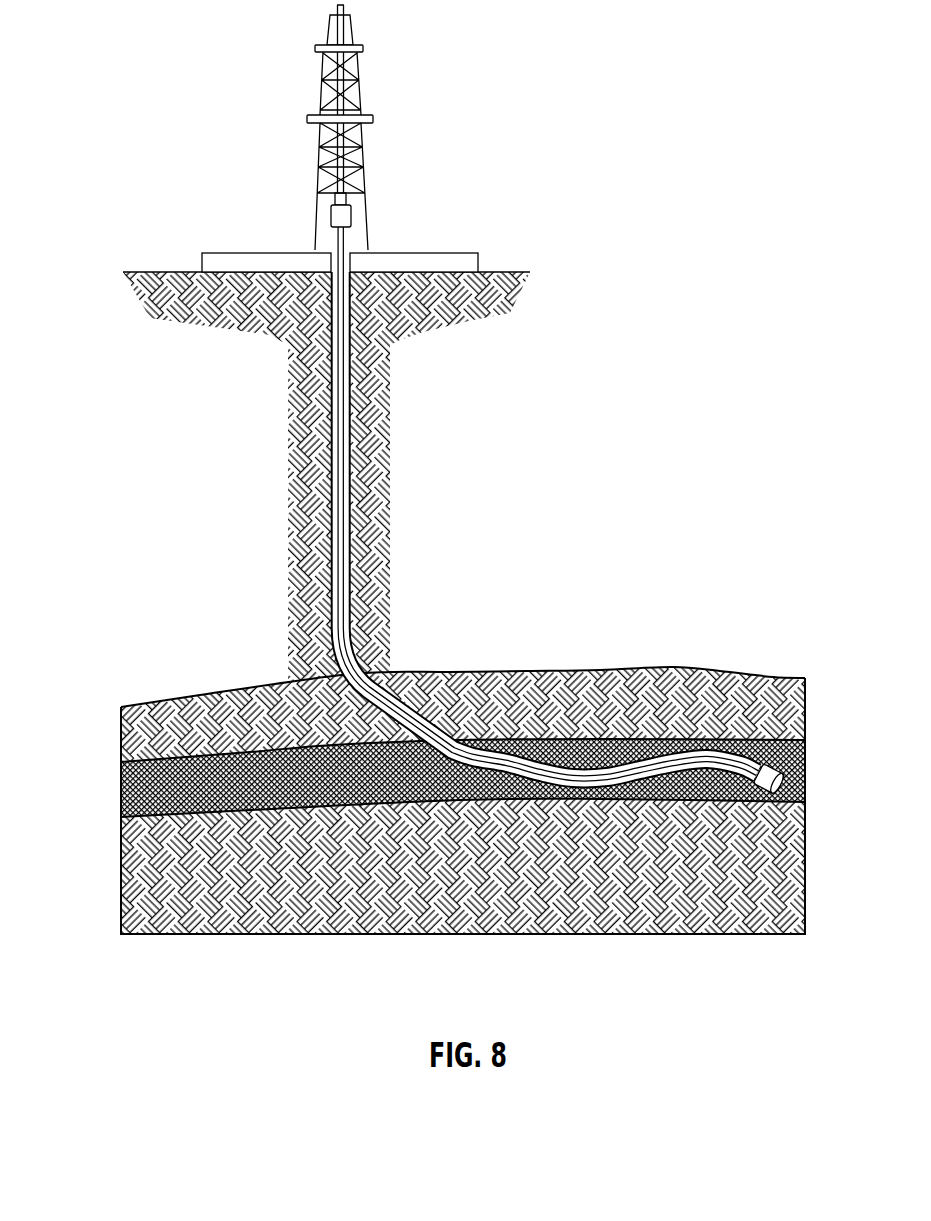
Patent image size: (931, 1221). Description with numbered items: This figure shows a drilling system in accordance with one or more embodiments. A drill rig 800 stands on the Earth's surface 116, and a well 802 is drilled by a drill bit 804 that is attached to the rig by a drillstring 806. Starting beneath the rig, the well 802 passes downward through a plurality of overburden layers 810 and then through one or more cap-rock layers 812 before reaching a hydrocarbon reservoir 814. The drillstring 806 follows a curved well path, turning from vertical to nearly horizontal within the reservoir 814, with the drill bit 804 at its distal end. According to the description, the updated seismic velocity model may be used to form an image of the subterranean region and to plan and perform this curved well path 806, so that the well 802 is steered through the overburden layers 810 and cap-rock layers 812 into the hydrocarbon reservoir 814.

The Earth's surface 116 is at (518, 272).
The drilling rig 800 is at (362, 147).
The well 802 is at (330, 412).
The drill bit 804 is at (770, 767).
The drillstring 806 is at (343, 238).
The overburden layers 810 is at (383, 403).
The cap-rock layers 812 is at (128, 730).
The hydrocarbon reservoir 814 is at (121, 800).